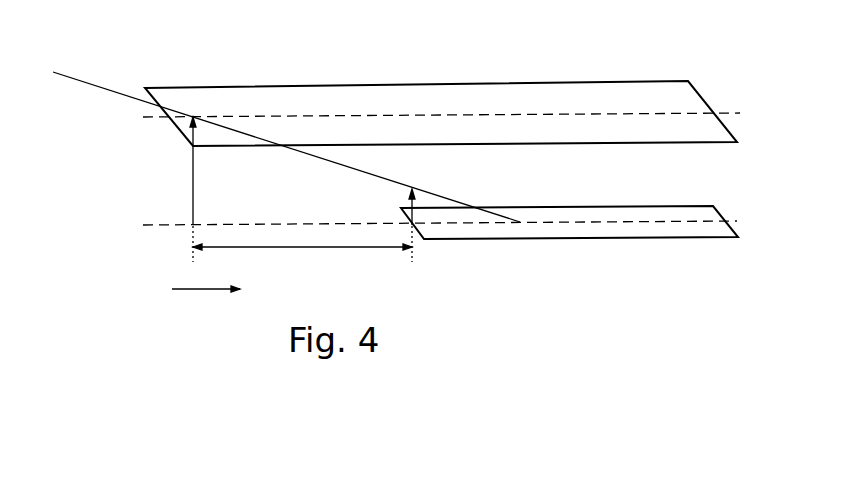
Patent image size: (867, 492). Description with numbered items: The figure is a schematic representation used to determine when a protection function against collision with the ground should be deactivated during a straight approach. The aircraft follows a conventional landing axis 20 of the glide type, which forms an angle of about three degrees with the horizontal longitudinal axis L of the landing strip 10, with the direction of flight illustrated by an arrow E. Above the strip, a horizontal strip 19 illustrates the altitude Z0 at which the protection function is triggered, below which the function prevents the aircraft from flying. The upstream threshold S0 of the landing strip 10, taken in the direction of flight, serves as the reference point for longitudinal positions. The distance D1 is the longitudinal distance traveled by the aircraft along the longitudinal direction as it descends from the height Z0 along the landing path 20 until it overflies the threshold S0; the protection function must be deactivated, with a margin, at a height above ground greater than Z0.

The conventional landing axis 20 is at (102, 90).
The horizontal strip 19 is at (617, 80).
The landing strip 10 is at (532, 240).
The longitudinal axis L is at (640, 222).
The altitude of engagement of the protection function Z0 is at (176, 189).
The upstream threshold S0 is at (413, 226).
The distance D1 is at (302, 263).
The direction of flight E is at (207, 293).